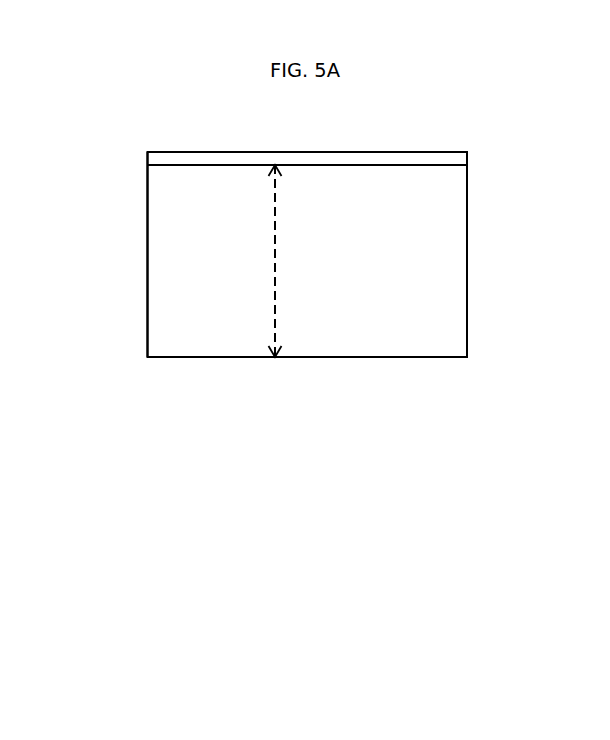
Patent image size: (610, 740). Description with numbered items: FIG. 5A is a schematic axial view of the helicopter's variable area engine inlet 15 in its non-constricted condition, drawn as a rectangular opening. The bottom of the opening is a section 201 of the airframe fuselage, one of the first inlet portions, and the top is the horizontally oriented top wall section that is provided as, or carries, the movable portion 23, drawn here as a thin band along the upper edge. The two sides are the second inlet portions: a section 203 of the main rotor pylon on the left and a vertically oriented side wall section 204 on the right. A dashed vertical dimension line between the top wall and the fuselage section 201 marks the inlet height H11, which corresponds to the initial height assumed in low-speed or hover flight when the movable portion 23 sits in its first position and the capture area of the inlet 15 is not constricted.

The variable area engine inlet 15 is at (370, 276).
The height of layer H11 is at (273, 307).
The section of a main rotor pylon 203 is at (147, 243).
The vertically oriented side wall section 204 is at (468, 289).
The movable portion 23 is at (419, 155).
The section of fuselage 201 is at (396, 358).